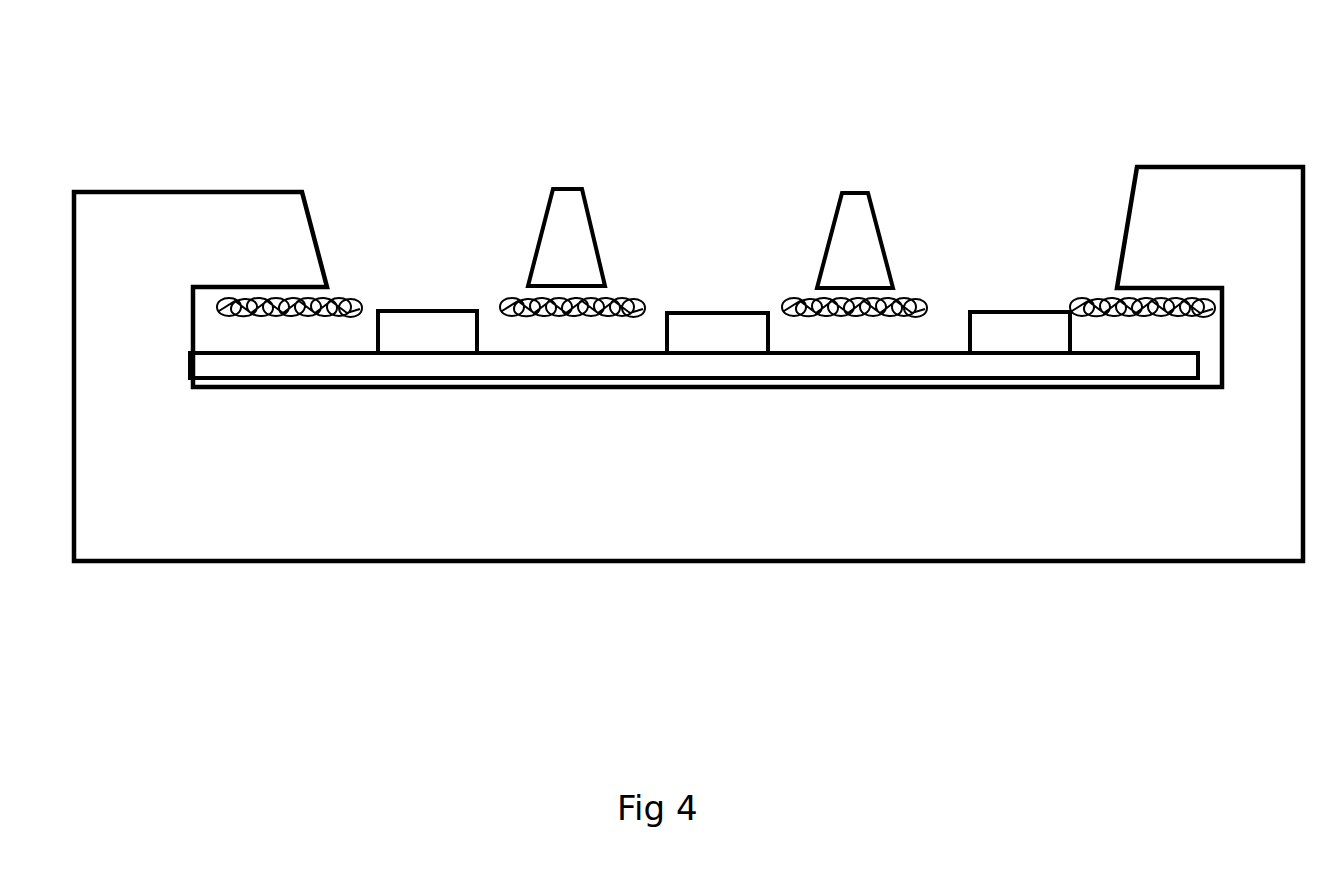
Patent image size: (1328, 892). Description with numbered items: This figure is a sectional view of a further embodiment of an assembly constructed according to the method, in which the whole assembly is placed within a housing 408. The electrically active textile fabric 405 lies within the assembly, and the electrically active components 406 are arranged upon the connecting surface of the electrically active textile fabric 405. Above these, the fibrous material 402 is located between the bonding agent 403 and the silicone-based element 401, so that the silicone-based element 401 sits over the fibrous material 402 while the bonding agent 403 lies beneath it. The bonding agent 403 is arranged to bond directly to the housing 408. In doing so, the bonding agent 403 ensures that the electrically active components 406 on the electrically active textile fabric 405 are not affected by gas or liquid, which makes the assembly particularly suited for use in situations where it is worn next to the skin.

The silicone-based element 401 is at (446, 250).
The fibrous material 402 is at (900, 300).
The bonding agent 403 is at (328, 287).
The electrically active textile fabric 405 is at (699, 363).
The electrically active components 406 is at (431, 330).
The housing 408 is at (912, 505).